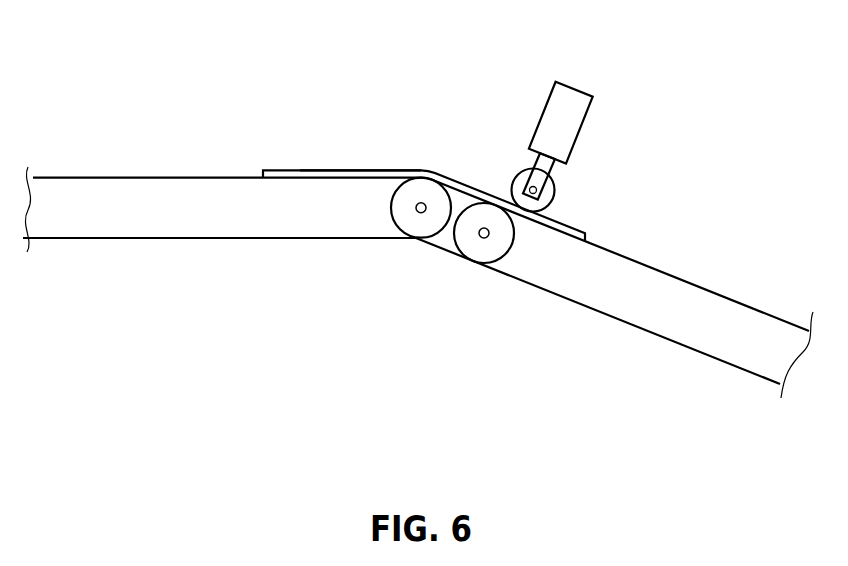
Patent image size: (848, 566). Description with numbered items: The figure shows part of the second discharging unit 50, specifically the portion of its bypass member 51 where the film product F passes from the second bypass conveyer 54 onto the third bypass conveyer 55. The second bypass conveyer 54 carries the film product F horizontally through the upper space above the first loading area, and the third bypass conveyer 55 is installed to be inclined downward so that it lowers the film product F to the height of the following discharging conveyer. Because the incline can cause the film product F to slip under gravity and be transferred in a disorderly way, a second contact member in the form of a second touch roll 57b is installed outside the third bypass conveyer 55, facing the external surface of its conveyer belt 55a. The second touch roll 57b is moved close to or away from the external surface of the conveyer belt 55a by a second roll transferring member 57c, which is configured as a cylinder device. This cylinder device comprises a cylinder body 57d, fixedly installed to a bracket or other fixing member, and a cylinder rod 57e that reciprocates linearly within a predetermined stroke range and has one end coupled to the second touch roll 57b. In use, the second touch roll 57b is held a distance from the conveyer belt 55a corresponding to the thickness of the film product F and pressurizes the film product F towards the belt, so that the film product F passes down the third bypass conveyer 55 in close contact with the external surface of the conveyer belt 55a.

The second discharging unit 50 is at (123, 162).
The bypass member 51 is at (170, 240).
The second bypass conveyer 54 is at (188, 192).
The third bypass conveyer 55 is at (688, 332).
The conveyer belt 55a is at (713, 291).
The second touch roll 57b is at (552, 188).
The second roll transferring member 57c is at (588, 87).
The cylinder body 57d is at (551, 105).
The cylinder rod 57e is at (535, 167).
The film product F is at (391, 168).